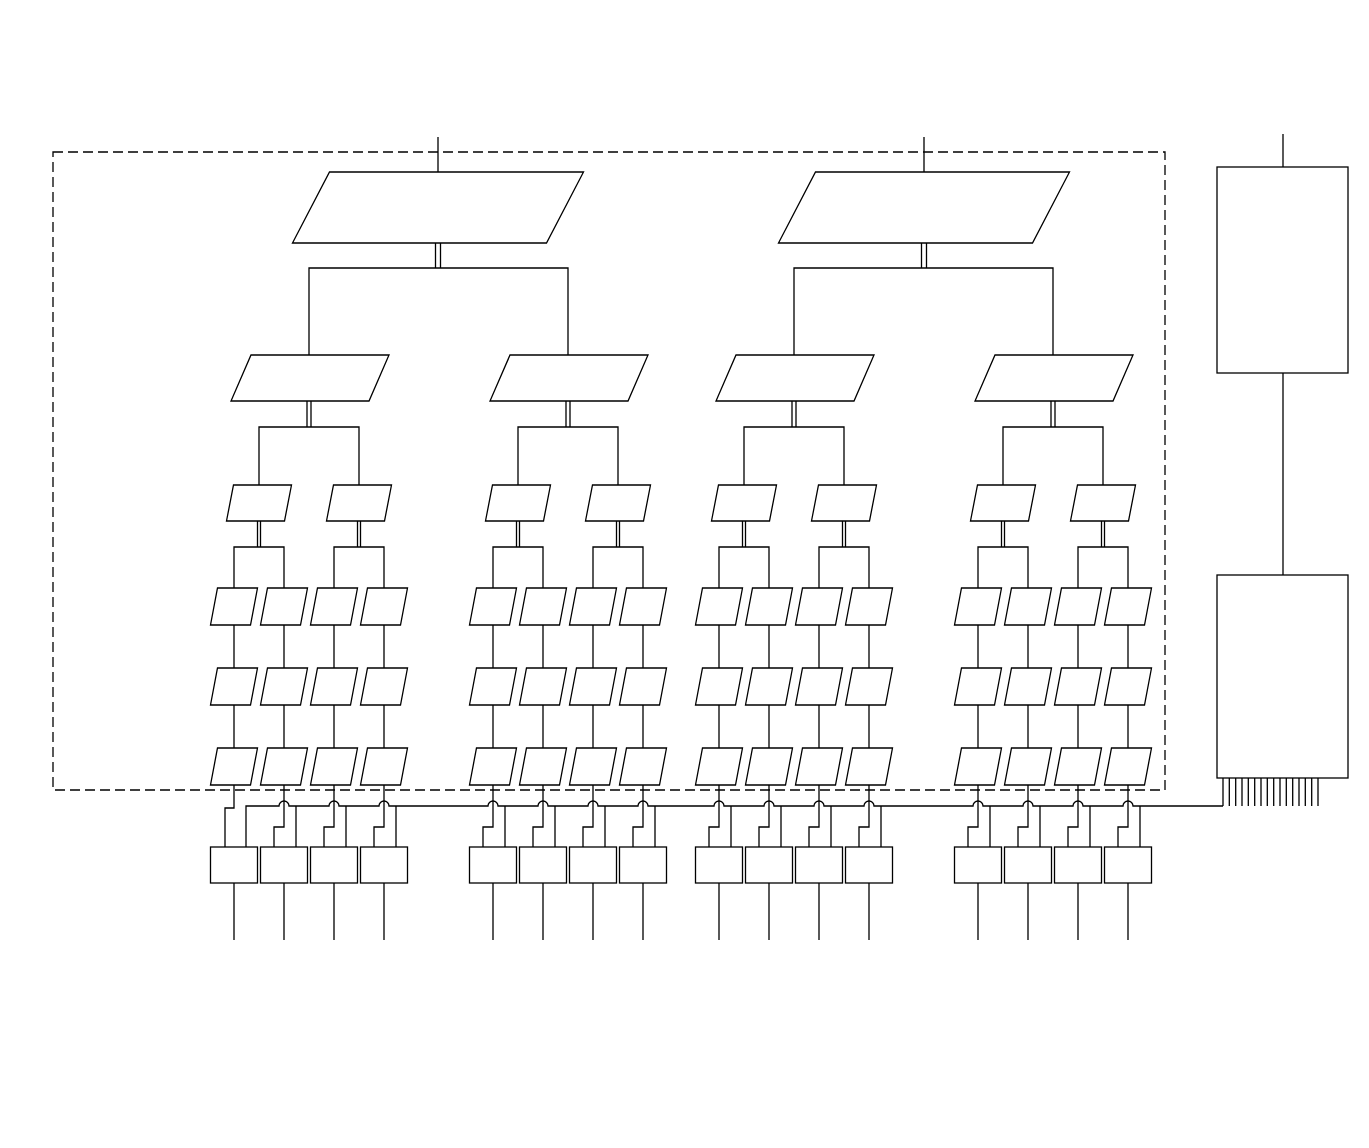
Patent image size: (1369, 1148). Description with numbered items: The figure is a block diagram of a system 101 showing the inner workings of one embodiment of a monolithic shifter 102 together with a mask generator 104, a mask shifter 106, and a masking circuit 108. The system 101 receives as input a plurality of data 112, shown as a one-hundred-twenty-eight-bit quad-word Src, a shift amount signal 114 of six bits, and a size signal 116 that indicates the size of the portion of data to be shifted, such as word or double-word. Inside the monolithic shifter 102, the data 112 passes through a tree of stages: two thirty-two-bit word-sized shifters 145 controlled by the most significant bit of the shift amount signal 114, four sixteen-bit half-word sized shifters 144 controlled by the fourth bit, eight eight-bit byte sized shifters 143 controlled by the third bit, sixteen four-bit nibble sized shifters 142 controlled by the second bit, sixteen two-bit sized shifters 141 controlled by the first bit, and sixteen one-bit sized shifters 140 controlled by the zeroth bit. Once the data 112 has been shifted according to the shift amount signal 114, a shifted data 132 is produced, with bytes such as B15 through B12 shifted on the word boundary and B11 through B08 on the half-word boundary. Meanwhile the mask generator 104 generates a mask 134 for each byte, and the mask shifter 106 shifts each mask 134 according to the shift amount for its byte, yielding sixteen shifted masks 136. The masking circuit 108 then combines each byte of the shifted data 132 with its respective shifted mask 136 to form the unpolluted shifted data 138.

The system 101 is at (154, 71).
The monolithic shifter 102 is at (609, 457).
The mask generator 104 is at (1282, 270).
The mask shifter 106 is at (1282, 676).
The masking circuit 108 is at (681, 834).
The data 112 is at (674, 141).
The shift amount signal 114 is at (122, 119).
The size signal 116 is at (1281, 139).
The shifted data 132 is at (703, 824).
The mask 134 is at (1303, 474).
The shifted masks 136 is at (1280, 804).
The unpolluted shifted data 138 is at (663, 923).
The 1-bit sized shifters 140 is at (681, 745).
The 2-bit sized shifters 141 is at (681, 665).
The 4-bit or nibble sized shifters 142 is at (681, 573).
The 8-bit or byte sized shifters 143 is at (681, 461).
The 16-bit or half-word sized shifters 144 is at (682, 322).
The 32-bit or word-sized shifters 145 is at (681, 207).